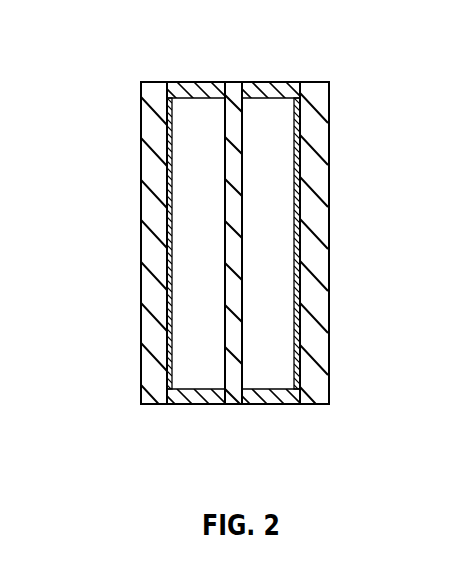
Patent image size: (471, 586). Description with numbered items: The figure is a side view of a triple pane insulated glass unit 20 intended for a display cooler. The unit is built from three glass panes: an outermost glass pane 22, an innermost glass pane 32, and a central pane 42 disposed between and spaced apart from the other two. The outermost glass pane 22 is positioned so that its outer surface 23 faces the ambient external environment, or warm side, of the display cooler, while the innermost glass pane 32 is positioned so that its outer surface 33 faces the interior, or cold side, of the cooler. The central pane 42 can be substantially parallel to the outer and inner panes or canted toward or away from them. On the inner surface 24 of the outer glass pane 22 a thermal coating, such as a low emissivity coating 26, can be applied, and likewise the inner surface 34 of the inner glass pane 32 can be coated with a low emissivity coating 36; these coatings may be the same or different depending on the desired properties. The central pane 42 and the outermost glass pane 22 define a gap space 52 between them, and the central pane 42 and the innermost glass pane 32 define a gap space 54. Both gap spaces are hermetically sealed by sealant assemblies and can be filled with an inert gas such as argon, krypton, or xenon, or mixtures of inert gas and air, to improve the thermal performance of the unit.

The insulated glass unit 20 is at (104, 88).
The outermost glass pane 22 is at (315, 92).
The outer surface of outermost glass pane 23 is at (336, 167).
The inner surface of outer glass pane 24 is at (287, 356).
The low emissivity coating 26 is at (294, 100).
The innermost glass pane 32 is at (153, 92).
The outer surface of innermost glass pane 33 is at (134, 290).
The inner surface of inner glass pane 34 is at (180, 356).
The low emissivity coating 36 is at (172, 100).
The central pane 42 is at (233, 88).
The gap space 52 is at (273, 247).
The gap space 54 is at (190, 185).